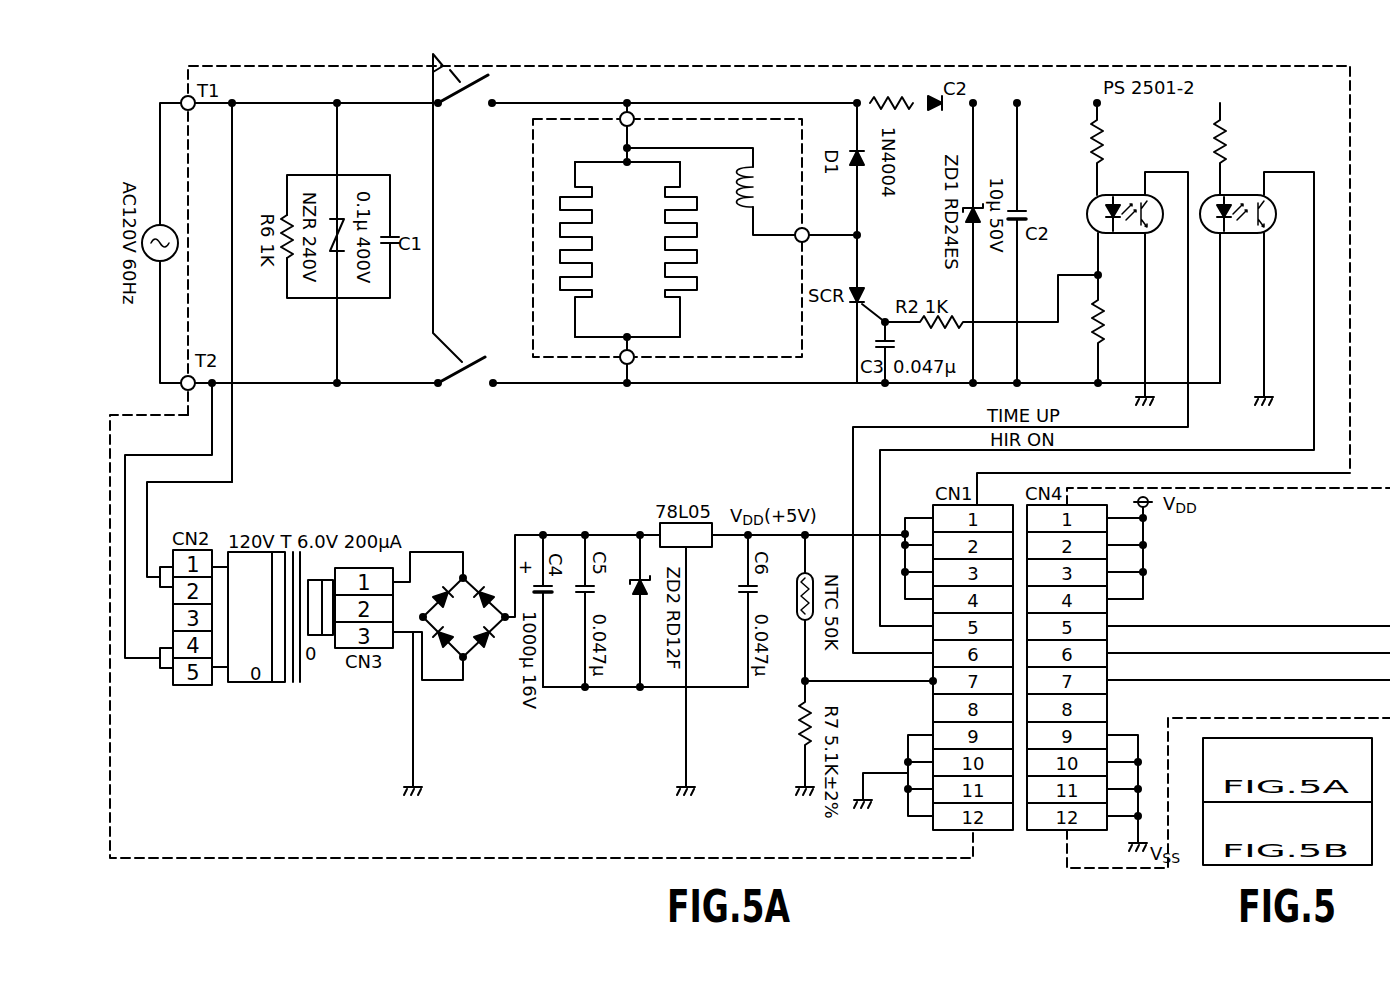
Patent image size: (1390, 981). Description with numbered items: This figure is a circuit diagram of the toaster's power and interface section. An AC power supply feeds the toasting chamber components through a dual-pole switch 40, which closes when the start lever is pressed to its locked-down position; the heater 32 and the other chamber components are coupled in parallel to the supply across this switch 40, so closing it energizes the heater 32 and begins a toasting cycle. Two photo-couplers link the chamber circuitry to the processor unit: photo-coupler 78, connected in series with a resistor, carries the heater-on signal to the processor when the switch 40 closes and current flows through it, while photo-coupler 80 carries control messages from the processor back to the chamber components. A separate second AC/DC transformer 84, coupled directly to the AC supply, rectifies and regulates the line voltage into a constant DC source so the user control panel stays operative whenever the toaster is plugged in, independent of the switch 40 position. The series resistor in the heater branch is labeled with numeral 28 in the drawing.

The dual-pole switch 40 is at (472, 52).
The heater 32 is at (588, 118).
The resistor R1 28 is at (827, 93).
The photo-coupler 80 is at (1125, 234).
The photo-coupler 78 is at (1244, 234).
The second AC/DC transformer 84 is at (465, 660).